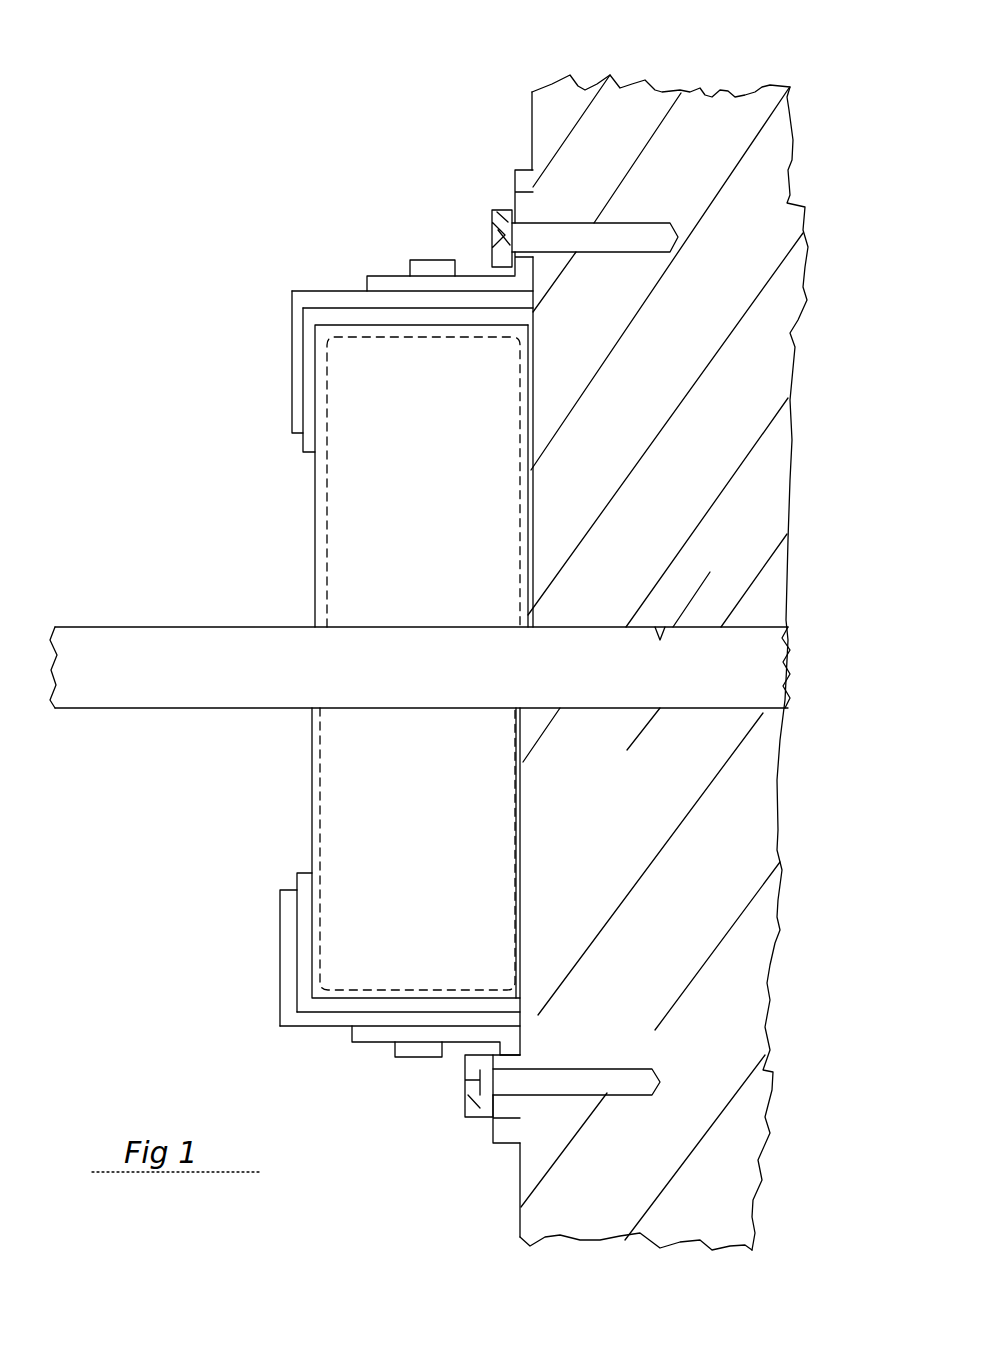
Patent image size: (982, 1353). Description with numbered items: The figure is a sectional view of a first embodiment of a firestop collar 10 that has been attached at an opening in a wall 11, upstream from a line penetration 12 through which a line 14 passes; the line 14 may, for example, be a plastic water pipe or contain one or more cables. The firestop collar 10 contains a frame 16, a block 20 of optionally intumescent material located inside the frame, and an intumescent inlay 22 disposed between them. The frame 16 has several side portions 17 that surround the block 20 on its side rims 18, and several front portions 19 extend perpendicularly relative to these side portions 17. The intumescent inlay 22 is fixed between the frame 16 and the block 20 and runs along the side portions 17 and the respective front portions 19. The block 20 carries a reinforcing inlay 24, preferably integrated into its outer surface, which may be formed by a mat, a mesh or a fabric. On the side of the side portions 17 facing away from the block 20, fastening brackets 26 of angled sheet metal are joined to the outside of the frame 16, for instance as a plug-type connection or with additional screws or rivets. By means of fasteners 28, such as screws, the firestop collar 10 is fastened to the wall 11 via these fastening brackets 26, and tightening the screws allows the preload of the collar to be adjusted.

The firestop collar 10 is at (279, 325).
The wall 11 is at (703, 125).
The line penetration 12 is at (676, 622).
The line 14 is at (697, 672).
The frame 16 is at (322, 290).
The side portions 17 is at (350, 298).
The side rims 18 is at (403, 325).
The front portions 19 is at (290, 380).
The block 20 is at (353, 545).
The intumescent inlay 22 is at (303, 440).
The reinforcing inlay 24 is at (327, 602).
The fastening brackets 26 is at (472, 285).
The fasteners 28 is at (509, 214).